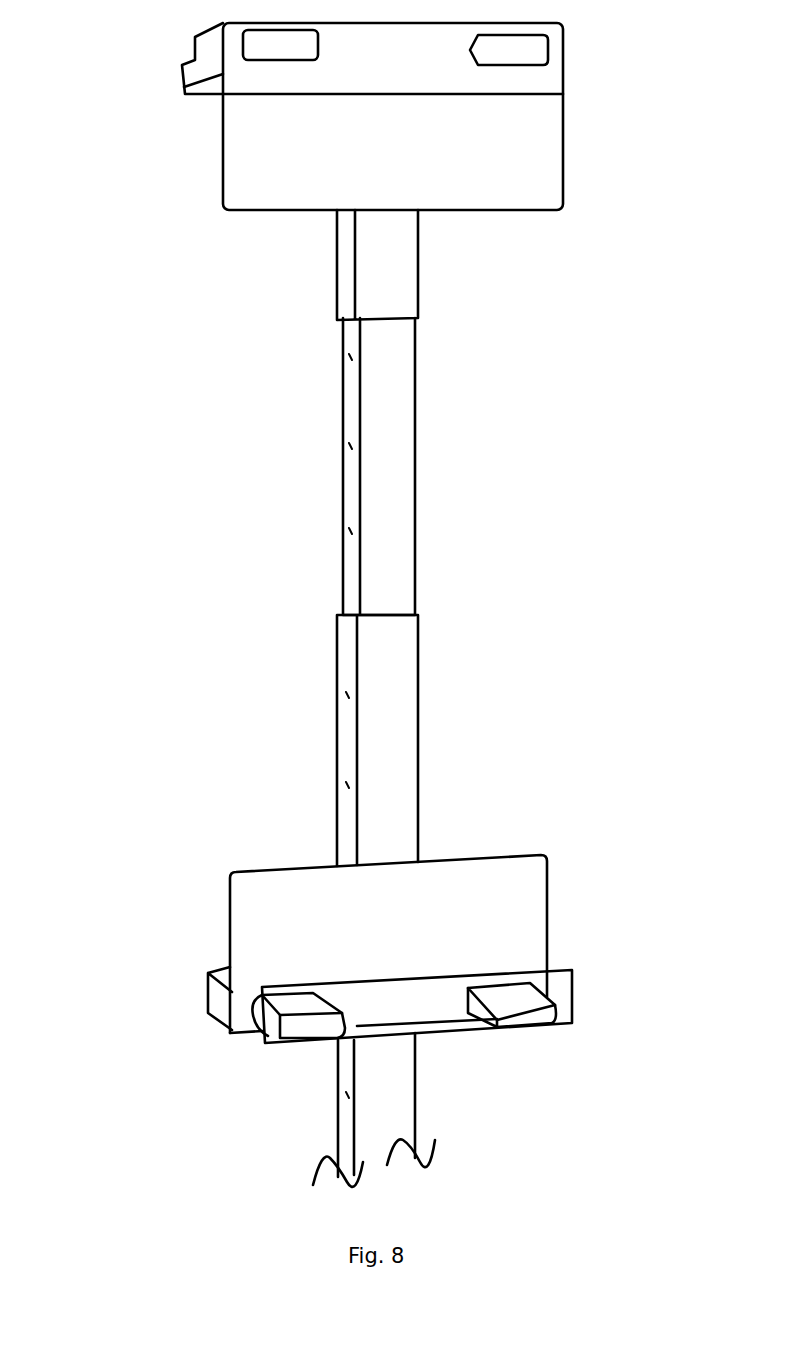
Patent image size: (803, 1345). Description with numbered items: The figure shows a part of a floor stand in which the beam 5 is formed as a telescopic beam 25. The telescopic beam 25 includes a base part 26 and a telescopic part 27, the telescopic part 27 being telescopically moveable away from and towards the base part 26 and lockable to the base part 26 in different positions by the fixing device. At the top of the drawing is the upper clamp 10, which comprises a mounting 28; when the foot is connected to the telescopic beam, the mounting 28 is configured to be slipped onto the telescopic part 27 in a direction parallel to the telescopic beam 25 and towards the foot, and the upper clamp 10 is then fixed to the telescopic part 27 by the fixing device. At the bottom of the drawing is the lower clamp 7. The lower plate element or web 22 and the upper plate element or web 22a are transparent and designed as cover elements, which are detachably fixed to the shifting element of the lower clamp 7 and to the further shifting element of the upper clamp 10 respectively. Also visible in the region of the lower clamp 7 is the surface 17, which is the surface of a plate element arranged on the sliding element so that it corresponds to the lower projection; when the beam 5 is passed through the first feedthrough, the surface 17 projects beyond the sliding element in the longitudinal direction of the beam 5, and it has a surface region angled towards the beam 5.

The beam 5 is at (324, 538).
The lower clamp 7 is at (360, 1021).
The upper clamp 10 is at (373, 116).
The surface 17 is at (407, 928).
The lower plate element or web 22 is at (560, 968).
The upper plate element or web 22a is at (547, 82).
The telescopic beam 25 is at (427, 592).
The base part 26 is at (393, 737).
The telescopic part 27 is at (397, 422).
The mounting 28 is at (400, 252).